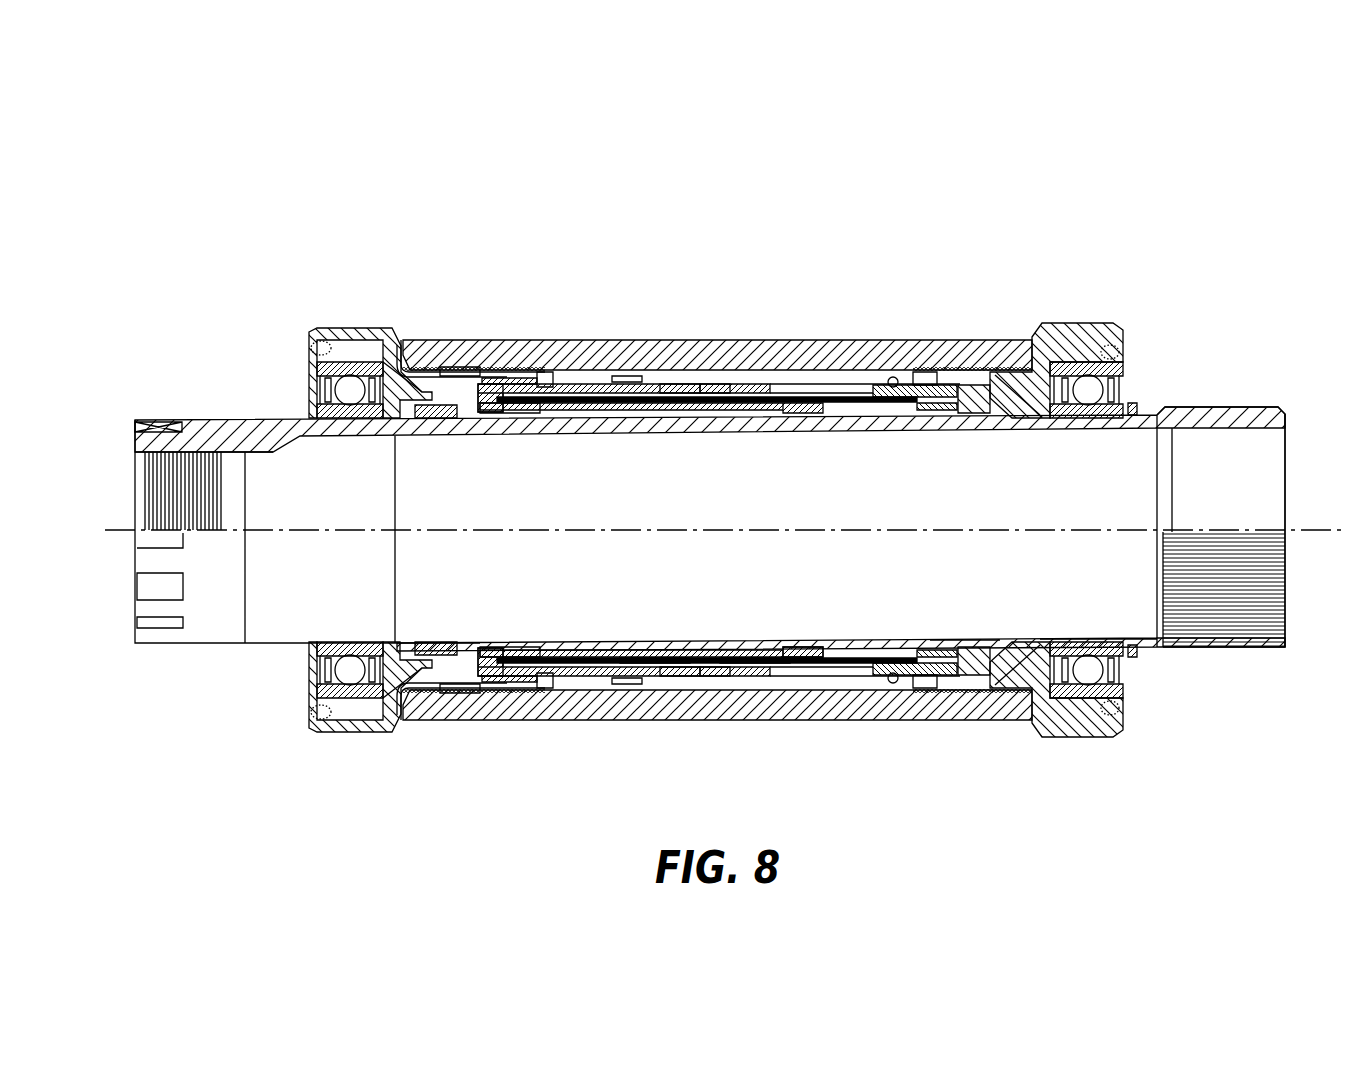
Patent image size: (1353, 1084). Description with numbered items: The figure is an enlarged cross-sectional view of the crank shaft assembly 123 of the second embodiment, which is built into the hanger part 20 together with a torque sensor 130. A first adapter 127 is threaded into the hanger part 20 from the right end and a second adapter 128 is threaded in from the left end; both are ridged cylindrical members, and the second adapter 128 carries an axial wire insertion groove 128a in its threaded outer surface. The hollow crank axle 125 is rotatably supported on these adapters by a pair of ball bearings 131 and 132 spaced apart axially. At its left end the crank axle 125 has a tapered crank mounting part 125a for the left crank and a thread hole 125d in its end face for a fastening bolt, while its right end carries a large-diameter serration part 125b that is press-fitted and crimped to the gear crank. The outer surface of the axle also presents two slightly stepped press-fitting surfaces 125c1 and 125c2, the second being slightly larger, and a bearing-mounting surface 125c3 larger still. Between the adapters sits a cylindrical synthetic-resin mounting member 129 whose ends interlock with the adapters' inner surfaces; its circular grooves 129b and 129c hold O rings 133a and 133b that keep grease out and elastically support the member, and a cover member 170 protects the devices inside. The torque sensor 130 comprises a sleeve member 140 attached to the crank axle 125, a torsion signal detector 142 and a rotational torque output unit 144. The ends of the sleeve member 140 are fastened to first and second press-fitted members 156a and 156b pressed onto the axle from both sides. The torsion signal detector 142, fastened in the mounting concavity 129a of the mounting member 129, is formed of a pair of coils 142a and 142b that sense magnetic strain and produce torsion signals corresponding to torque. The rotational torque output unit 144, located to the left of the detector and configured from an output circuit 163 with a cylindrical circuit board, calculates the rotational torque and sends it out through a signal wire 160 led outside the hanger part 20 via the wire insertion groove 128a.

The hanger part 20 is at (773, 340).
The crank shaft assembly 123 is at (715, 385).
The crank axle 125 is at (300, 415).
The crank mounting part 125a is at (162, 423).
The large-diameter serration part 125b is at (1225, 407).
The press-fitting surface 125c1 is at (460, 652).
The press-fitting surface 125c2 is at (967, 672).
The bearing-mounting surface 125c3 is at (1065, 737).
The thread hole 125d is at (143, 478).
The first adapter 127 is at (1075, 317).
The second adapter 128 is at (362, 322).
The wire insertion groove 128a is at (418, 342).
The mounting member 129 is at (880, 383).
The mounting concavity 129a is at (827, 383).
The circular groove 129b is at (505, 385).
The circular groove 129c is at (970, 387).
The torque sensor 130 is at (680, 384).
The bearing 131 is at (340, 333).
The bearing 132 is at (1112, 333).
The O ring 133a is at (458, 374).
The O ring 133b is at (935, 372).
The sleeve member 140 is at (505, 414).
The torsion signal detector 142 is at (752, 385).
The coil 142a is at (745, 677).
The coil 142b is at (687, 663).
The rotational torque output unit 144 is at (596, 377).
The first press-fitted member 156a is at (448, 418).
The second press-fitted member 156b is at (972, 413).
The signal wire 160 is at (398, 337).
The output circuit 163 is at (630, 378).
The cover member 170 is at (823, 670).